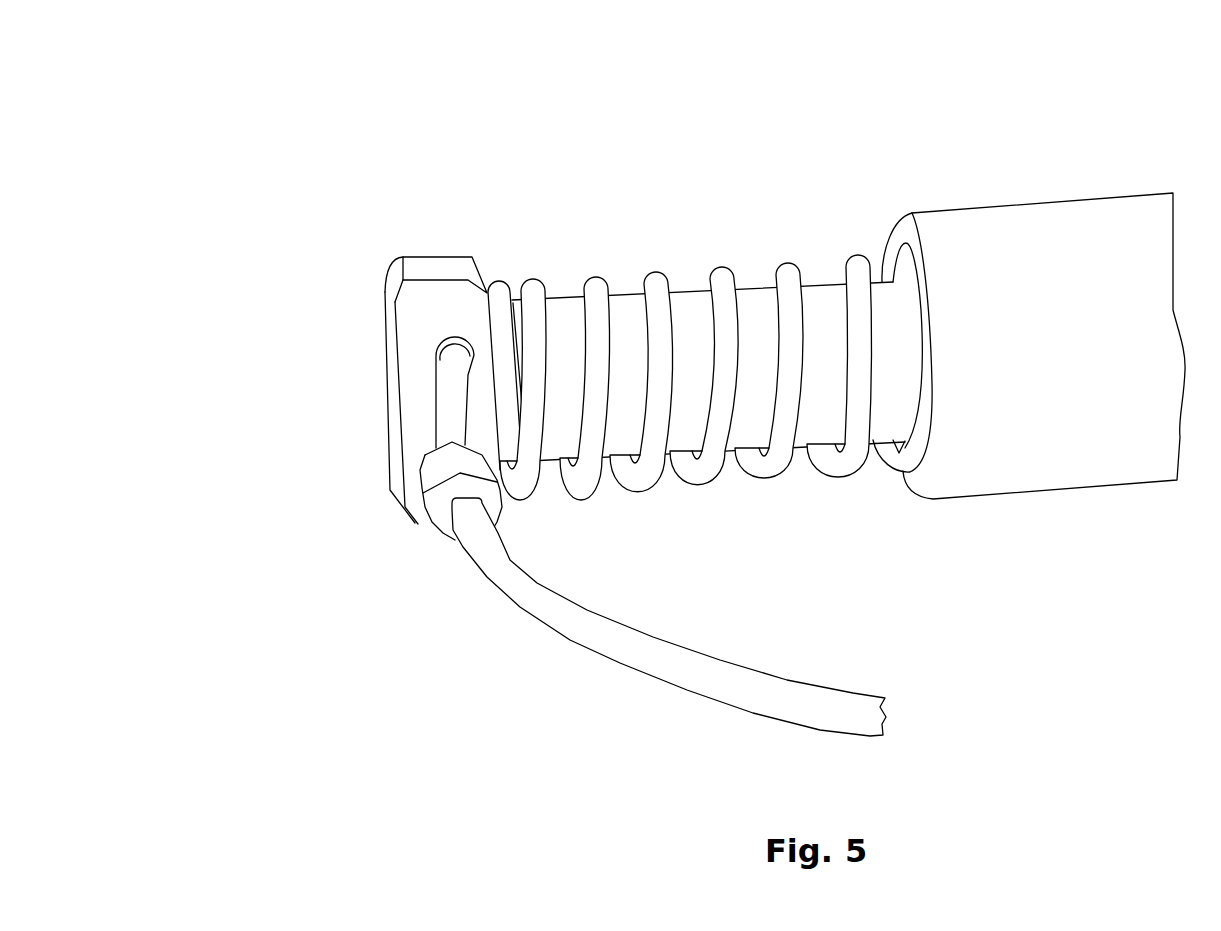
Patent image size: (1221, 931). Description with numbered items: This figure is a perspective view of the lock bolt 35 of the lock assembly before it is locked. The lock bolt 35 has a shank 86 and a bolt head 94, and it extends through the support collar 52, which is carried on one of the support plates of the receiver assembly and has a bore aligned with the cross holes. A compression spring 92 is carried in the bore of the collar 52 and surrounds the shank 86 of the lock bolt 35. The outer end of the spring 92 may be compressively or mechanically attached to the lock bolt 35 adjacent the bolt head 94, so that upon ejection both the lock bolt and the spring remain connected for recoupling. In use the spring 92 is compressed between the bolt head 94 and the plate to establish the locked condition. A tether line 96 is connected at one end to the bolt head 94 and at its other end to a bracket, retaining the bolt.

The lock bolt 35 is at (385, 281).
The support collar 52 is at (1040, 200).
The shank 86 is at (758, 307).
The compression spring 92 is at (653, 272).
The bolt head 94 is at (385, 353).
The tether line 96 is at (508, 575).